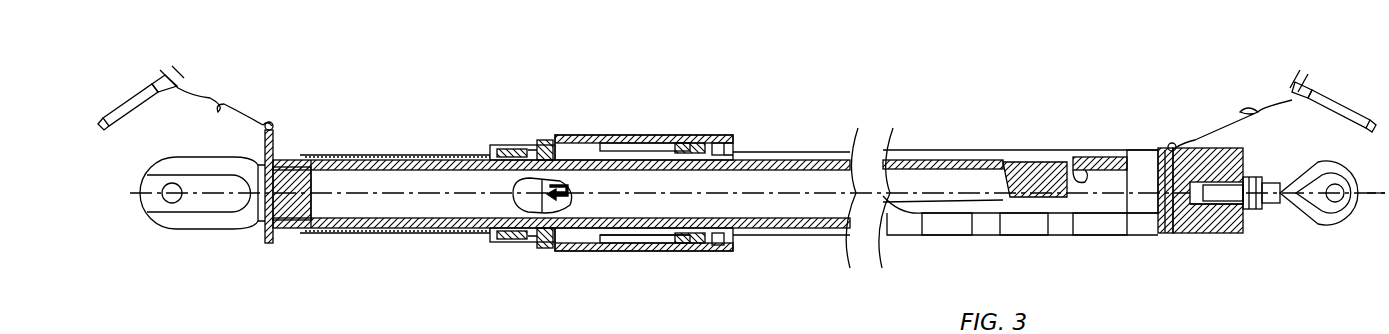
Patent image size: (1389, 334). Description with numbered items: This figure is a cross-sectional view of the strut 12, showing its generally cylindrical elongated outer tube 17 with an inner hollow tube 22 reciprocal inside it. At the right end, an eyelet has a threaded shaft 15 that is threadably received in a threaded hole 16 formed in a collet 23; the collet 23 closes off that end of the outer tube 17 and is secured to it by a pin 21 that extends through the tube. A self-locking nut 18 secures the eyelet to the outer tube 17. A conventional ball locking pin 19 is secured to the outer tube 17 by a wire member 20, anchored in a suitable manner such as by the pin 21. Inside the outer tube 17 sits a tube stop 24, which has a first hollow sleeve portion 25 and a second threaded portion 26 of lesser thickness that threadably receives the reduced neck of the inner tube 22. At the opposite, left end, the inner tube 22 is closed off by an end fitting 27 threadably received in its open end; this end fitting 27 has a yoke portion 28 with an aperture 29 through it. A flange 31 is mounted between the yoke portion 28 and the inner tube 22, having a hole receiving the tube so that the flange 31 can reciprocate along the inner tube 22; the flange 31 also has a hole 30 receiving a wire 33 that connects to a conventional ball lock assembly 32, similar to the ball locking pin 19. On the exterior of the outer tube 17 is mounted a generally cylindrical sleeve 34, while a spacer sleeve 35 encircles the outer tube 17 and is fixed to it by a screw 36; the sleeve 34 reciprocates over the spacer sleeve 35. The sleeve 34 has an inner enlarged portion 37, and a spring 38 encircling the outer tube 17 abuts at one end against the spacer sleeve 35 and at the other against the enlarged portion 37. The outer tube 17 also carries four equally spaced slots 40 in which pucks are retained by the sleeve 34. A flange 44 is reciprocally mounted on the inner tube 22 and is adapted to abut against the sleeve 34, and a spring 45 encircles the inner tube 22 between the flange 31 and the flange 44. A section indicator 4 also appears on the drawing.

The piston 4 is at (560, 247).
The strut 12 is at (640, 5).
The threaded shaft 15 is at (1235, 215).
The threaded hole 16 is at (1212, 210).
The outer tube 17 is at (975, 150).
The self-locking nut 18 is at (1263, 180).
The ball locking pin 19 is at (1350, 105).
The wire member 20 is at (1222, 120).
The pin 21 is at (1165, 225).
The inner hollow tube 22 is at (415, 160).
The collet 23 is at (1222, 225).
The tube stop 24 is at (1108, 158).
The first hollow sleeve portion 25 is at (1075, 175).
The second threaded portion 26 is at (1045, 165).
The end fitting 27 is at (297, 210).
The yoke portion 28 is at (200, 225).
The aperture 29 is at (172, 205).
The hole 30 is at (258, 124).
The flange 31 is at (280, 126).
The ball lock assembly 32 is at (137, 97).
The wire 33 is at (215, 96).
The sleeve 34 is at (636, 136).
The spacer sleeve 35 is at (728, 145).
The screw 36 is at (705, 252).
The inner enlarged portion 37 is at (584, 140).
The spring 38 is at (637, 250).
The slot 40 is at (356, 332).
The flange 44 is at (488, 148).
The spring 45 is at (360, 233).